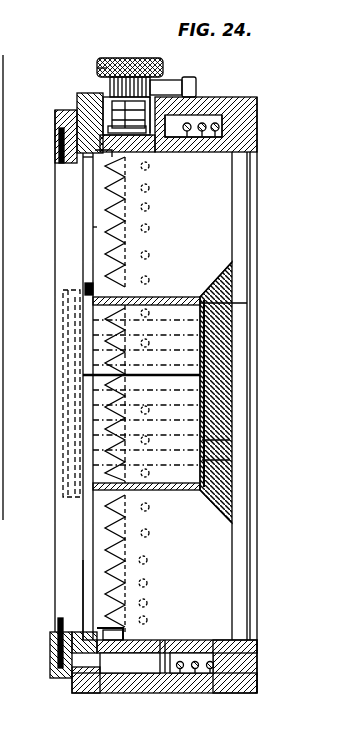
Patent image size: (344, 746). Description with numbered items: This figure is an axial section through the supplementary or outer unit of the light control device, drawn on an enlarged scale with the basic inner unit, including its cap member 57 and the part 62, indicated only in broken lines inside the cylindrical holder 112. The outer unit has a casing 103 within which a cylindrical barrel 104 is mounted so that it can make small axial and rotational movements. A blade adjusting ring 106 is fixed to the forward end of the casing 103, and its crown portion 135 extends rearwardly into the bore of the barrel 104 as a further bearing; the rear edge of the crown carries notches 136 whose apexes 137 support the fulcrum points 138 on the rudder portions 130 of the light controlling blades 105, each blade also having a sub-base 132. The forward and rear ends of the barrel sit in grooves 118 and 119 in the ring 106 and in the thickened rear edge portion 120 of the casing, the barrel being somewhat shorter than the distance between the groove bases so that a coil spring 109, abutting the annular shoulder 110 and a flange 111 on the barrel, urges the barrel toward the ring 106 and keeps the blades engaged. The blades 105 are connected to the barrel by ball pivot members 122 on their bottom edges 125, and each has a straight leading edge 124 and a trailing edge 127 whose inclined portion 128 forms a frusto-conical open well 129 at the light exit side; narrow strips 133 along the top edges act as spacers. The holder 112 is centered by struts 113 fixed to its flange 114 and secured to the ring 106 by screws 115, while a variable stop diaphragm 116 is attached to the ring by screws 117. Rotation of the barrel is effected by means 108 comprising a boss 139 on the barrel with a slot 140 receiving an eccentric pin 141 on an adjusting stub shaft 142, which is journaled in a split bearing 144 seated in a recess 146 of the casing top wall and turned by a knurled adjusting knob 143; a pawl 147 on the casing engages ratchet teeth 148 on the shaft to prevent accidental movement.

The cap member 57 is at (82, 345).
The guide member 62 is at (65, 317).
The casing 103 is at (127, 693).
The cylindrical barrel 104 is at (203, 640).
The light controlling blades 105 is at (217, 217).
The blade adjusting ring 106 is at (78, 110).
The means for effecting rotation of the barrel 108 is at (135, 56).
The coil spring 109 is at (208, 672).
The annular shoulder 110 is at (213, 667).
The flange 111 is at (163, 674).
The cylindrical holder 112 is at (162, 298).
The struts 113 is at (82, 570).
The flange 114 is at (86, 287).
The screws 115 is at (73, 682).
The variable stop diaphragm 116 is at (53, 647).
The screws 117 is at (83, 157).
The groove 118 is at (58, 133).
The groove 119 is at (233, 138).
The rear edge portion 120 is at (240, 110).
The ball pivot members 122 is at (147, 190).
The leading edge 124 is at (93, 227).
The bottom edge 125 is at (166, 634).
The trailing edge 127 is at (238, 186).
The inclined edge portion 128 is at (220, 467).
The open well 129 is at (218, 342).
The rudder portion 130 is at (107, 637).
The sub-base 132 is at (100, 633).
The strip 133 is at (147, 492).
The crown portion 135 is at (110, 157).
The notches 136 is at (123, 248).
The apex 137 is at (80, 633).
The fulcrum point 138 is at (110, 630).
The boss 139 is at (153, 123).
The slot 140 is at (83, 185).
The pin 141 is at (190, 86).
The adjusting stub shaft 142 is at (110, 110).
The knurled adjusting knob 143 is at (118, 58).
The split bearing 144 is at (100, 118).
The recess 146 is at (160, 87).
The pawl 147 is at (133, 55).
The ratchet teeth 148 is at (107, 68).